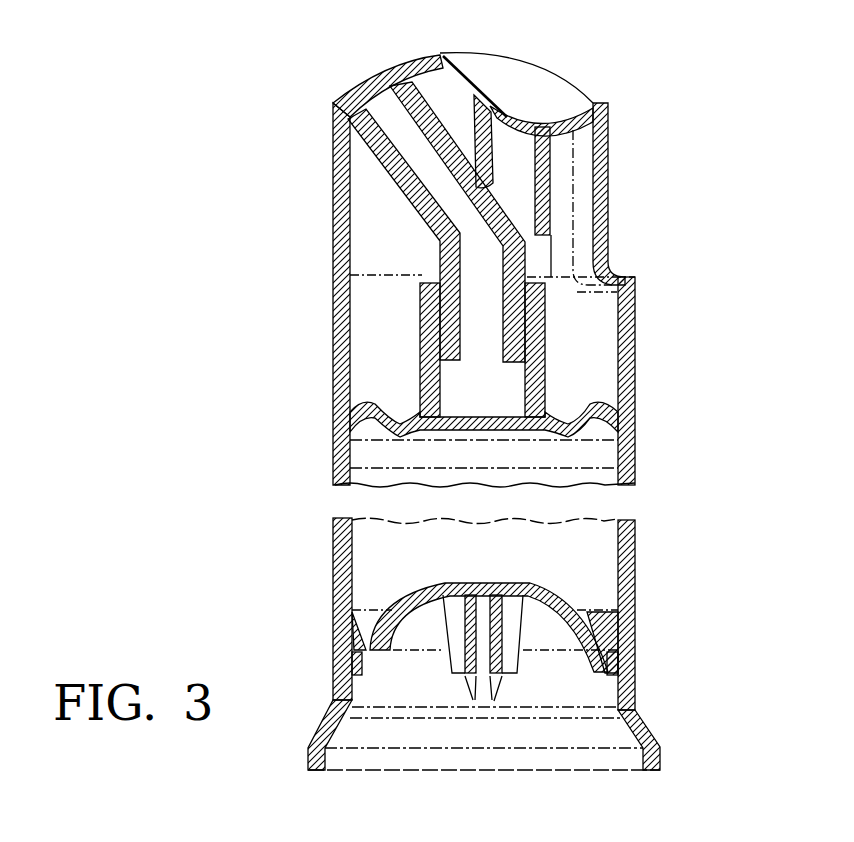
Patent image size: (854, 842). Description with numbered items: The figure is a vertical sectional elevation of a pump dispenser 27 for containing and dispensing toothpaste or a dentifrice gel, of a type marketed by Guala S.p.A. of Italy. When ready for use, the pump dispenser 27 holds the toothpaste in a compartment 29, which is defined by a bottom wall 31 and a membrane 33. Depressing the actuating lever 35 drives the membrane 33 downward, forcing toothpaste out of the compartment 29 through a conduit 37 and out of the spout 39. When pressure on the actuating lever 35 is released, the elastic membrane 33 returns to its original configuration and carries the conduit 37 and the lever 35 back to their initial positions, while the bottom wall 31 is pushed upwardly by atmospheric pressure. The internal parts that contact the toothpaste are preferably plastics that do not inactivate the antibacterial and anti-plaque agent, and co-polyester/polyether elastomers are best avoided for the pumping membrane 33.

The pump dispenser 27 is at (320, 269).
The compartment 29 is at (560, 535).
The bottom wall 31 is at (403, 593).
The membrane 33 is at (593, 403).
The actuating lever 35 is at (423, 60).
The conduit 37 is at (527, 260).
The spout 39 is at (390, 107).